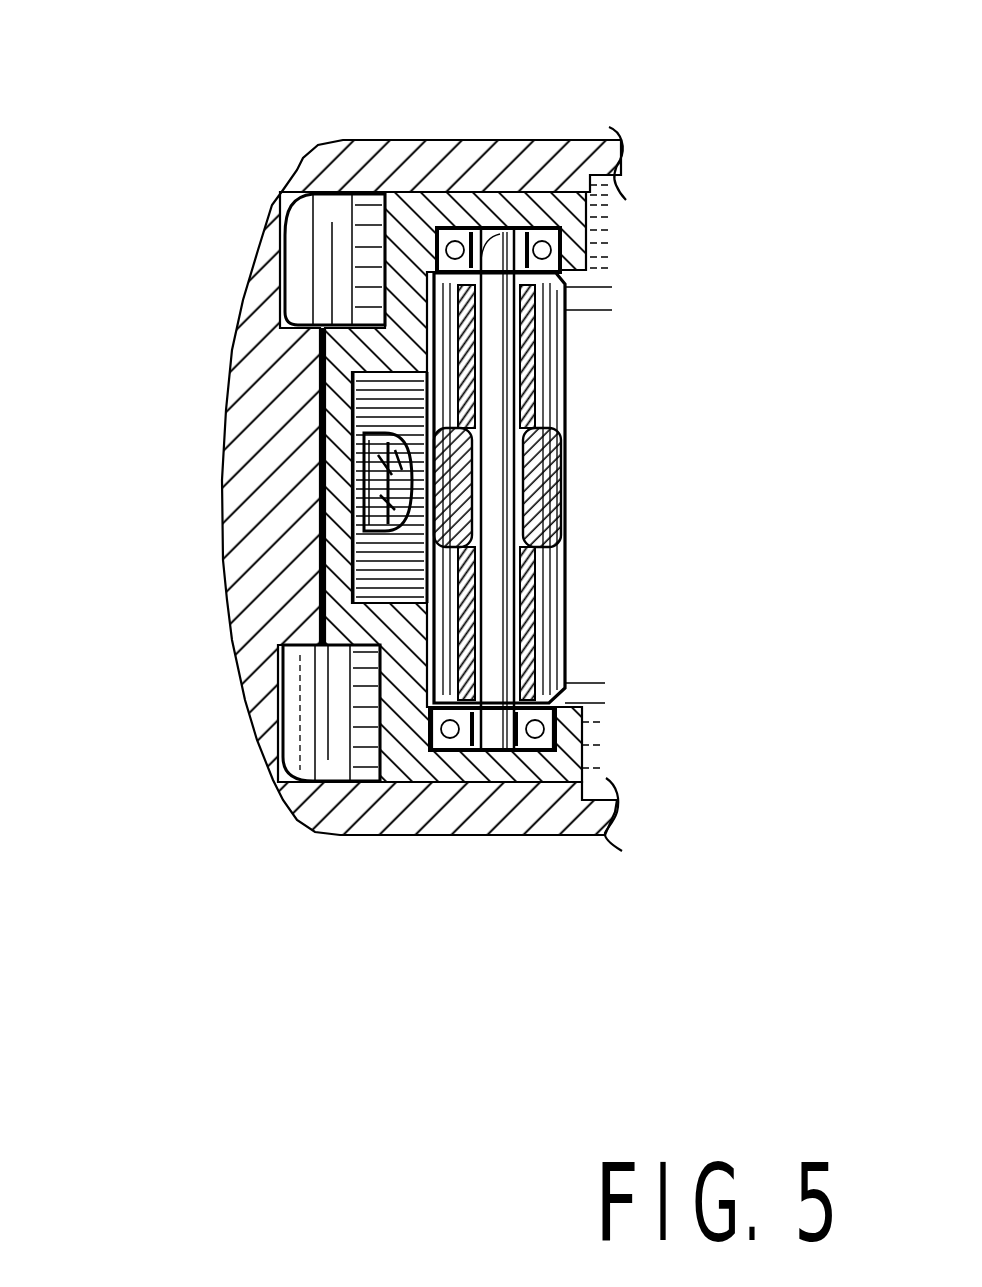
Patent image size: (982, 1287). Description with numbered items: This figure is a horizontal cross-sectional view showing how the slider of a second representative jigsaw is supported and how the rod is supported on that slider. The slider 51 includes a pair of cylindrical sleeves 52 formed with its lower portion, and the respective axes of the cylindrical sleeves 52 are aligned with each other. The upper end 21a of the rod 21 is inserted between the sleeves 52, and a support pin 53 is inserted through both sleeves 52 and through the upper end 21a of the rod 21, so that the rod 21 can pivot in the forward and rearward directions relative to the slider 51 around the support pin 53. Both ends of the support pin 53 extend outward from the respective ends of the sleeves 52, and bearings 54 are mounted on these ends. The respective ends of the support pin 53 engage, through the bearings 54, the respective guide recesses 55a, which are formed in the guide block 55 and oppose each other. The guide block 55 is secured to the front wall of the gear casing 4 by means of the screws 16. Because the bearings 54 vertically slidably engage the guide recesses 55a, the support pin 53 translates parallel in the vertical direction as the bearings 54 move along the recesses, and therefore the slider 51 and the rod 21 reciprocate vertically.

The gear casing 4 is at (222, 483).
The screws 16 is at (372, 443).
The rod 21 is at (235, 496).
The upper end of the rod 21a is at (427, 523).
The slider 51 is at (565, 407).
The cylindrical sleeves 52 is at (537, 375).
The support pin 53 is at (500, 605).
The bearings 54 is at (560, 246).
The guide block 55 is at (493, 237).
The guide recesses 55a is at (388, 292).